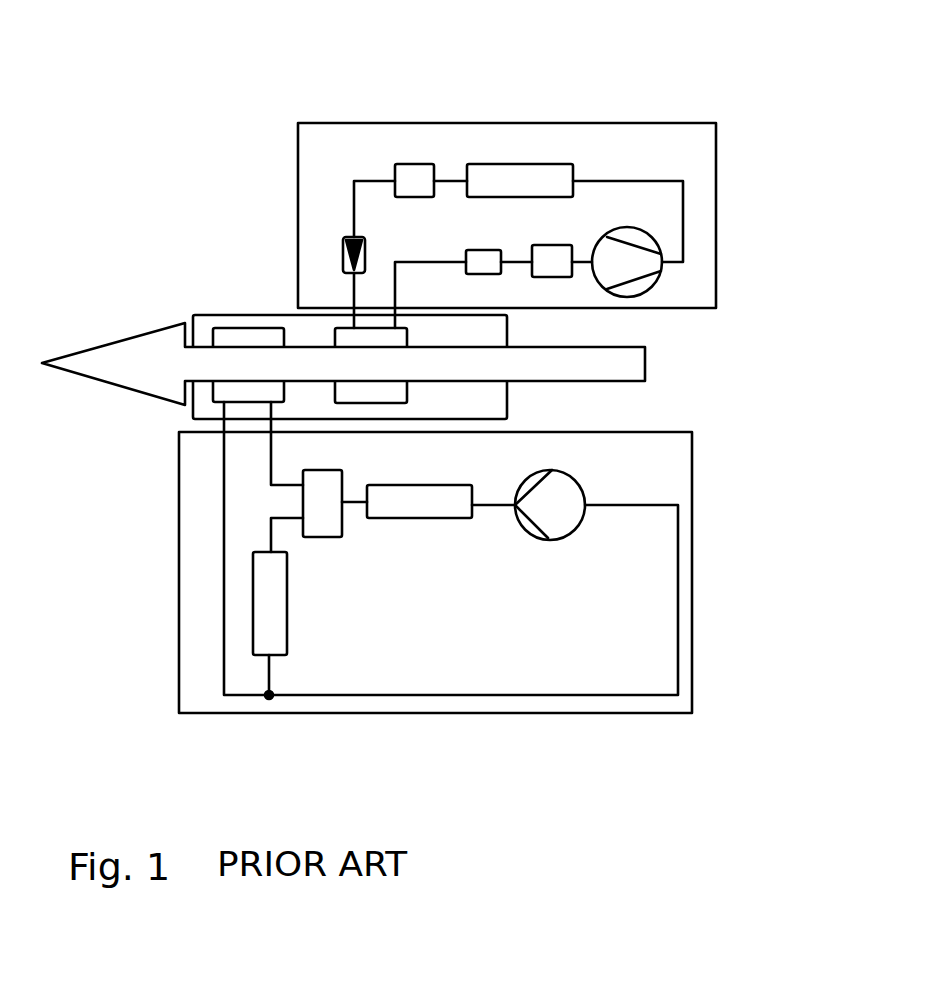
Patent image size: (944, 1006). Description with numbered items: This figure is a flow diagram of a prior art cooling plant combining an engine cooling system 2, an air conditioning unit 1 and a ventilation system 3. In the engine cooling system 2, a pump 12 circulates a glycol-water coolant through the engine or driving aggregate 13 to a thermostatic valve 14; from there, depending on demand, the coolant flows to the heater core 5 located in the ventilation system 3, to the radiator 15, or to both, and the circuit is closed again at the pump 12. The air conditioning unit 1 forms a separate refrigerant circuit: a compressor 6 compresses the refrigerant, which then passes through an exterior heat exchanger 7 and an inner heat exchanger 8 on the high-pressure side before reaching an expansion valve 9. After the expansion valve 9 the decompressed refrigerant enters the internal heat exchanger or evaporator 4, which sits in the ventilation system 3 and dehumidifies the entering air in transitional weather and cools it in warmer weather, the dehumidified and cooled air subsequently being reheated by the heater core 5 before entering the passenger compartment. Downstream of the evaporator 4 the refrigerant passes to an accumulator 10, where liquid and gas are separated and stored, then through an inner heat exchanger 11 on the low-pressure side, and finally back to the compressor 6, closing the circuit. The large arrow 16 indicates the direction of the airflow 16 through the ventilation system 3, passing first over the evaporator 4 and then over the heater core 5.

The air conditioning unit 1 is at (675, 163).
The engine cooling system 2 is at (673, 484).
The ventilation system 3 is at (483, 407).
The internal heat exchanger/evaporator 4 is at (357, 337).
The heater core 5 is at (245, 339).
The compressor 6 is at (636, 266).
The exterior heat exchanger 7 is at (533, 175).
The inner heat exchanger 8 is at (415, 175).
The expansion valve 9 is at (338, 250).
The accumulator 10 is at (479, 260).
The inner heat exchanger 11 is at (545, 255).
The pump 12 is at (563, 484).
The engine or driving aggregate 13 is at (422, 503).
The thermostatic valve 14 is at (323, 522).
The radiator 15 is at (269, 615).
The air / airflow arrow 16 is at (607, 362).